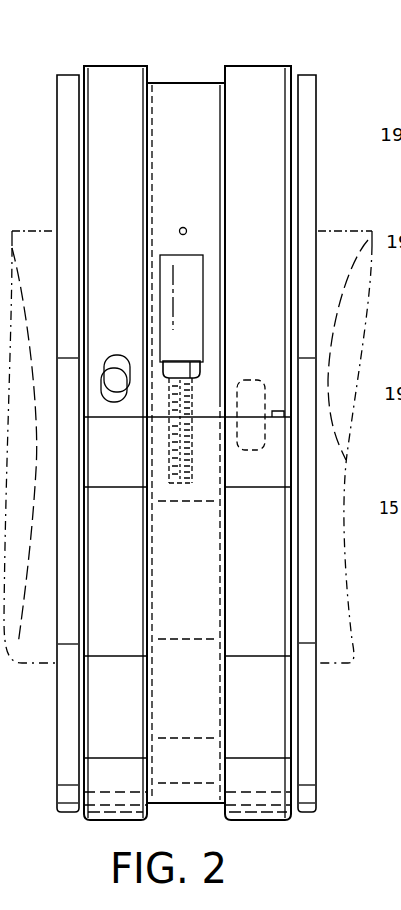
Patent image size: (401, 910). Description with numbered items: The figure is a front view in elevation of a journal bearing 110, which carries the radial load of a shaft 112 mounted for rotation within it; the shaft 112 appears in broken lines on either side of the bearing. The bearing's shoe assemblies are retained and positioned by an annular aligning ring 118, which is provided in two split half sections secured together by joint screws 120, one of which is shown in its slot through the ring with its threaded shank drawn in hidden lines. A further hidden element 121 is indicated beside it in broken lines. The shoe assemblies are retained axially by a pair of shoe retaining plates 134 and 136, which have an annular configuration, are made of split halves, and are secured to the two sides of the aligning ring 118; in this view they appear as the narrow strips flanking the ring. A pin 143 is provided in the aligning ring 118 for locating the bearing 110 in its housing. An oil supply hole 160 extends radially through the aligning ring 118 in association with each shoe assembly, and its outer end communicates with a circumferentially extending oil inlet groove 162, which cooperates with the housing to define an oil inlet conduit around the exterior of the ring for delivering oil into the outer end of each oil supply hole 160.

The journal bearing 110 is at (324, 689).
The shaft 112 is at (340, 230).
The aligning ring 118 is at (265, 78).
The joint screws 120 is at (180, 358).
The hidden fastener 121 is at (250, 386).
The shoe retaining plate 134 is at (69, 77).
The shoe retaining plate 136 is at (308, 87).
The pin 143 is at (114, 372).
The oil supply hole 160 is at (183, 227).
The oil inlet groove 162 is at (225, 71).